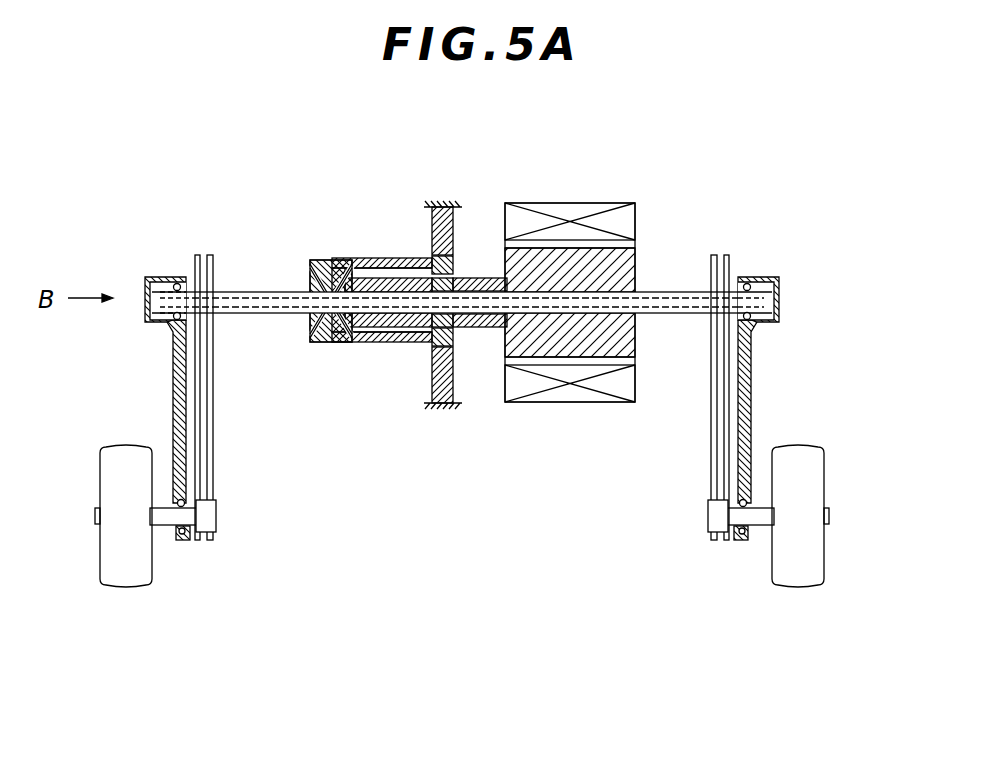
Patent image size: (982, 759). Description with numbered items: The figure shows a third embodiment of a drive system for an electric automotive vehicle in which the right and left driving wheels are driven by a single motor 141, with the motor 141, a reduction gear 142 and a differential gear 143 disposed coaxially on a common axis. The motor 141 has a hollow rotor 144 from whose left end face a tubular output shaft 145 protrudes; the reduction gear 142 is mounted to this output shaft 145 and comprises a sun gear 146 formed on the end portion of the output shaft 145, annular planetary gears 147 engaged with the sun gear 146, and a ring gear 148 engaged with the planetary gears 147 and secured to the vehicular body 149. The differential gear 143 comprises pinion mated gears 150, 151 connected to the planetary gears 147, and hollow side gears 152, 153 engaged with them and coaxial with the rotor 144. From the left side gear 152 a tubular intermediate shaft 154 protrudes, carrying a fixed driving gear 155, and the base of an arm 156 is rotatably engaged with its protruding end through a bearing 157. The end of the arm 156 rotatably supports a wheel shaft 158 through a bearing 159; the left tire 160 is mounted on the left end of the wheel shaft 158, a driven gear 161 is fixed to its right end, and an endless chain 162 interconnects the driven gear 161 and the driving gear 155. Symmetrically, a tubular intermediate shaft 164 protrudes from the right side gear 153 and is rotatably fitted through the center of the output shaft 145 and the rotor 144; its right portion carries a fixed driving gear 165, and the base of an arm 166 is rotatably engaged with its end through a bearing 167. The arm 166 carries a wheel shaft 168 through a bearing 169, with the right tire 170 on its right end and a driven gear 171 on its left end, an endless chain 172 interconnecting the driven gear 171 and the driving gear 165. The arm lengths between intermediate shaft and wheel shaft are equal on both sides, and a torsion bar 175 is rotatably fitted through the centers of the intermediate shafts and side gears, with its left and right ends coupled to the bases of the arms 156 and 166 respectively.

The motor 141 is at (604, 202).
The reduction gear 142 is at (406, 248).
The differential gear 143 is at (301, 279).
The rotor 144 is at (546, 250).
The output shaft 145 is at (492, 322).
The sun gear 146 is at (456, 346).
The planetary gears 147 is at (460, 256).
The ring gear 148 is at (462, 207).
The vehicular body 149 is at (436, 203).
The pinion mated gear 150 is at (318, 262).
The pinion mated gear 151 is at (342, 344).
The left side gear 152 is at (316, 332).
The right side gear 153 is at (352, 258).
The intermediate shaft 154 is at (247, 314).
The driving gear 155 is at (203, 255).
The arm 156 is at (172, 374).
The bearing 157 is at (165, 278).
The wheel shaft 158 is at (172, 526).
The bearing 159 is at (192, 538).
The left tire 160 is at (138, 578).
The driven gear 161 is at (218, 506).
The endless chain 162 is at (214, 456).
The intermediate shaft 164 is at (398, 343).
The driving gear 165 is at (713, 256).
The arm 166 is at (752, 392).
The bearing 167 is at (748, 278).
The wheel shaft 168 is at (756, 526).
The bearing 169 is at (720, 540).
The right tire 170 is at (804, 560).
The driven gear 171 is at (708, 510).
The endless chain 172 is at (712, 436).
The torsion bar 175 is at (663, 314).